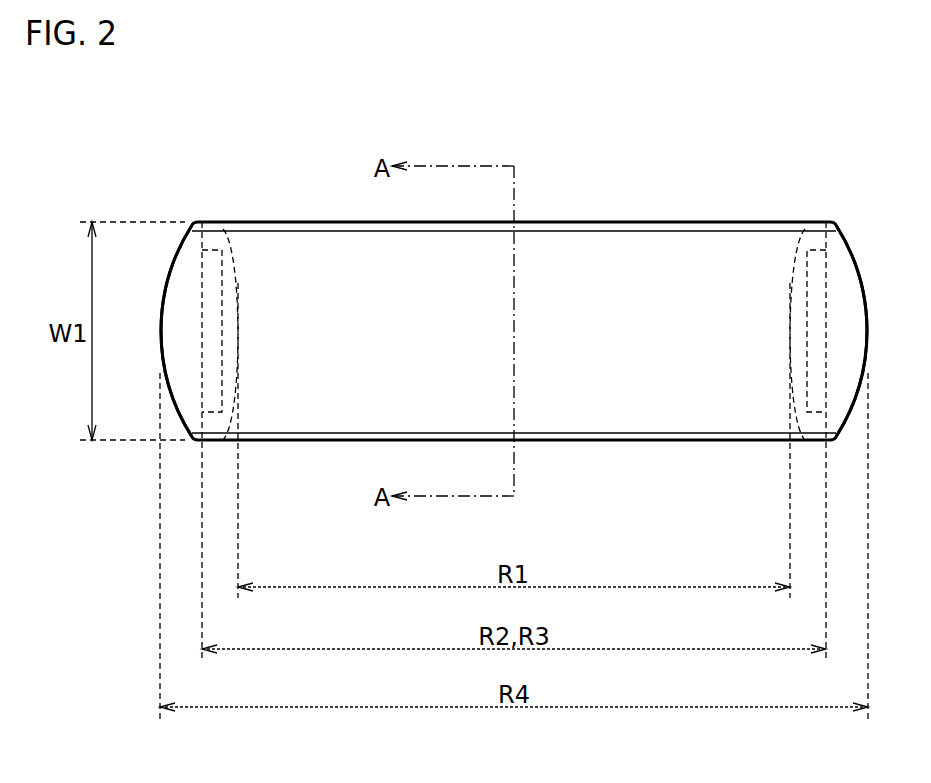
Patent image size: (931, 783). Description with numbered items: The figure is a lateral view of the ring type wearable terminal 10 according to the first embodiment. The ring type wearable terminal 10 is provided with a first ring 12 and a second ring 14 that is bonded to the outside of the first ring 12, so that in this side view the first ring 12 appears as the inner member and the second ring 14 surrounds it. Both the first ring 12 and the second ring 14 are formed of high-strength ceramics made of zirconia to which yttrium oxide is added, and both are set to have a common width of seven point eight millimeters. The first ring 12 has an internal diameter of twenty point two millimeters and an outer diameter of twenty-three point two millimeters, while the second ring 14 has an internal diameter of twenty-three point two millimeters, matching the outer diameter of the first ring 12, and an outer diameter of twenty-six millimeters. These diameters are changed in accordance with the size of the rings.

The ring type wearable terminal 10 is at (122, 110).
The first ring 12 is at (237, 283).
The second ring 14 is at (166, 284).